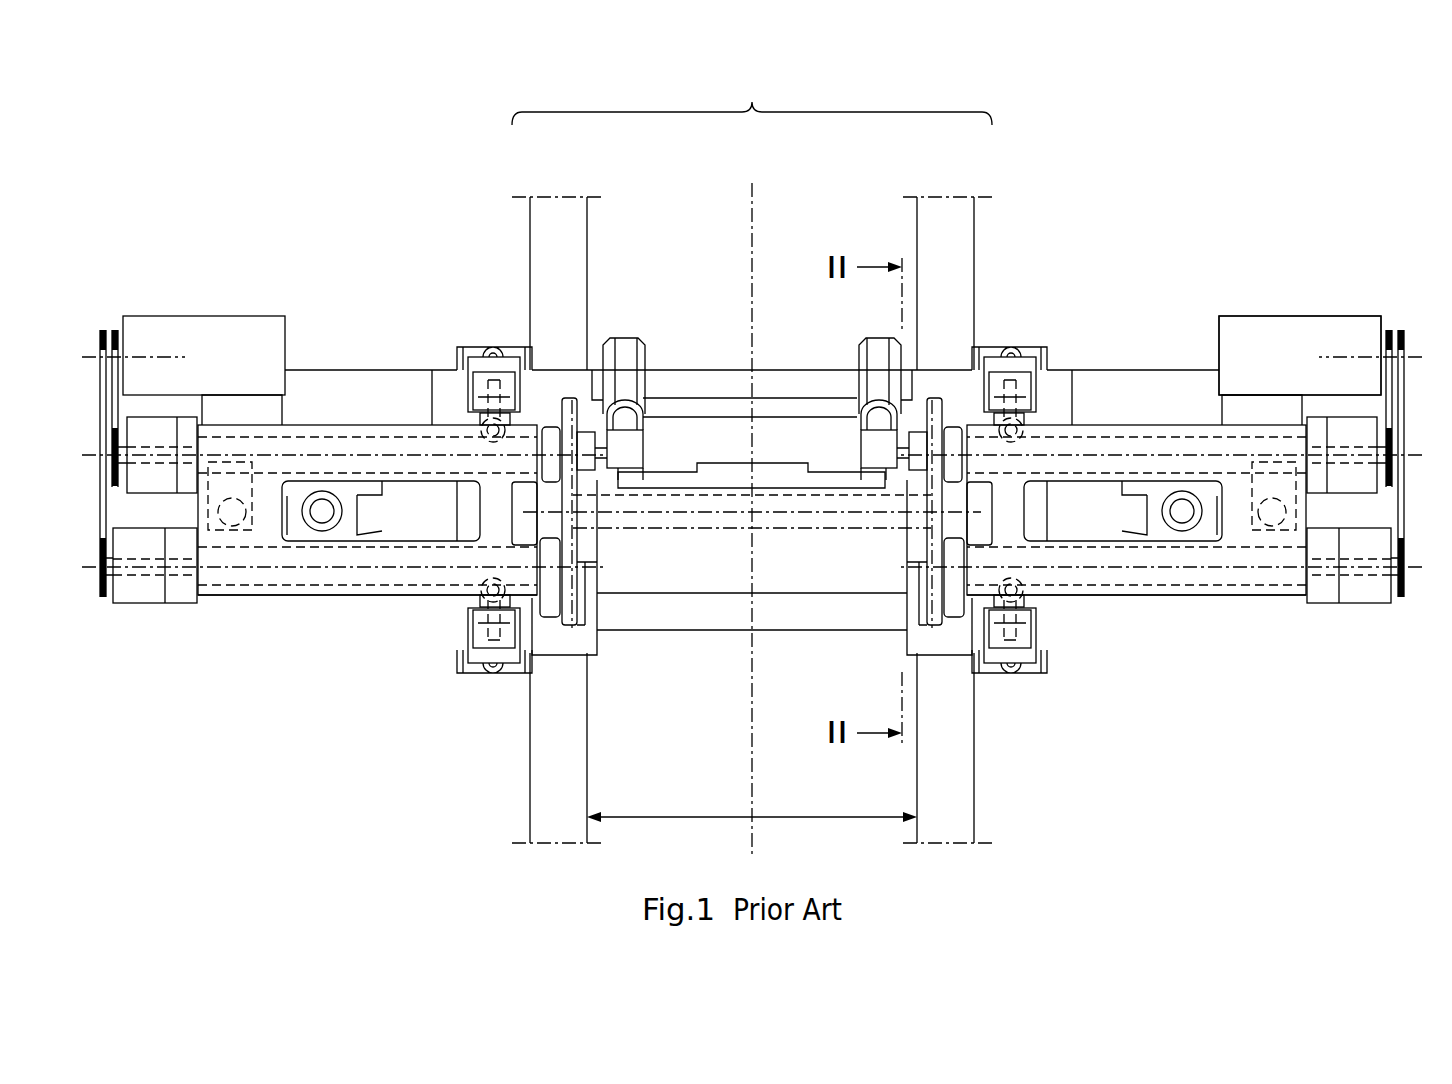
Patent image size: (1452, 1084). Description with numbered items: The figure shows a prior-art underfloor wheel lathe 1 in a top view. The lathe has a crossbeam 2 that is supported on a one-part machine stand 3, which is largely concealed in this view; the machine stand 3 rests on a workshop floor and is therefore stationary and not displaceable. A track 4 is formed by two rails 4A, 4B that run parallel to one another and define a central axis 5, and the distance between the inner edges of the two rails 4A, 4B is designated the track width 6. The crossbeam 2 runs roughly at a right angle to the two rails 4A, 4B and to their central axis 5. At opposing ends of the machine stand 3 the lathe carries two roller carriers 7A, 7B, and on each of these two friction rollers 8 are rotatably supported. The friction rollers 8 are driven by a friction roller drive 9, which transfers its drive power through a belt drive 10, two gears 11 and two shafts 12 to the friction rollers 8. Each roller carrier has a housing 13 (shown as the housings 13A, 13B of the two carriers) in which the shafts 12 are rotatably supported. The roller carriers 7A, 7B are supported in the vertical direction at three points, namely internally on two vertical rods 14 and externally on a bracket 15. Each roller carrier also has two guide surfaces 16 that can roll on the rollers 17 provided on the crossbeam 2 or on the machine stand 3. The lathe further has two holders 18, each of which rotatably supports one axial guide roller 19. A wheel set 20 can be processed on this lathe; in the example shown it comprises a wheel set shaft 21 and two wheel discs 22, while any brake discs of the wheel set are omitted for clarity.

The underfloor wheel lathe 1 is at (1212, 178).
The crossbeam 2 is at (332, 388).
The machine stand 3 is at (555, 642).
The track 4 is at (752, 98).
The rail 4A is at (558, 212).
The rail 4B is at (946, 212).
The central axis 5 is at (755, 221).
The track width 6 is at (693, 813).
The roller carrier 7A is at (323, 610).
The roller carrier 7B is at (1158, 610).
The friction roller 8 is at (551, 437).
The friction roller drive 9 is at (170, 332).
The belt drive 10 is at (100, 513).
The gear 11 is at (130, 590).
The shaft 12 is at (372, 445).
The housing 13 is at (1188, 590).
The housing 13A is at (270, 528).
The housing 13B is at (1235, 530).
The vertical rod 14 is at (483, 422).
The bracket 15 is at (232, 515).
The guide surface 16 is at (485, 612).
The roller 17 is at (497, 645).
The holder 18 is at (625, 353).
The axial guide roller 19 is at (640, 445).
The wheel set 20 is at (795, 553).
The wheel set shaft 21 is at (733, 520).
The wheel disc 22 is at (557, 527).